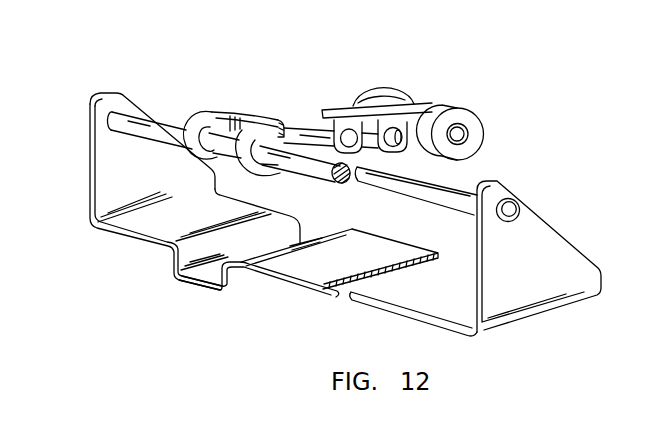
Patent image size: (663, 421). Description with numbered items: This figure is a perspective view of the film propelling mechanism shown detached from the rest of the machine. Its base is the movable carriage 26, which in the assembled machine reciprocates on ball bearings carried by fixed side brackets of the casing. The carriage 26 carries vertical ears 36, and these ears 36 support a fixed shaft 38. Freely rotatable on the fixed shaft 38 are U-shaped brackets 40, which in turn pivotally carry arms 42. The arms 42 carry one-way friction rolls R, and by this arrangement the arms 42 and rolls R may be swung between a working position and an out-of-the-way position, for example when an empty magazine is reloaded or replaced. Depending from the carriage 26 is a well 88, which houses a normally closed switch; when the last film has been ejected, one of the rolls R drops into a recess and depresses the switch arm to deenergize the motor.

The movable carriage 26 is at (138, 228).
The vertical ears 36 is at (103, 144).
The fixed shaft 38 is at (166, 122).
The U-shaped brackets 40 is at (246, 118).
The arms 42 is at (298, 130).
The well 88 is at (210, 277).
The one-way friction rolls R is at (364, 95).